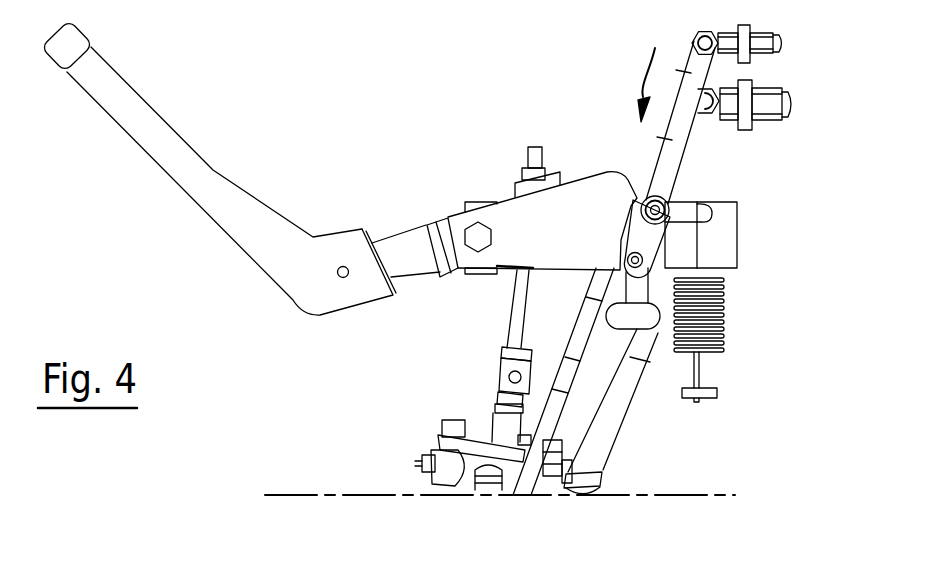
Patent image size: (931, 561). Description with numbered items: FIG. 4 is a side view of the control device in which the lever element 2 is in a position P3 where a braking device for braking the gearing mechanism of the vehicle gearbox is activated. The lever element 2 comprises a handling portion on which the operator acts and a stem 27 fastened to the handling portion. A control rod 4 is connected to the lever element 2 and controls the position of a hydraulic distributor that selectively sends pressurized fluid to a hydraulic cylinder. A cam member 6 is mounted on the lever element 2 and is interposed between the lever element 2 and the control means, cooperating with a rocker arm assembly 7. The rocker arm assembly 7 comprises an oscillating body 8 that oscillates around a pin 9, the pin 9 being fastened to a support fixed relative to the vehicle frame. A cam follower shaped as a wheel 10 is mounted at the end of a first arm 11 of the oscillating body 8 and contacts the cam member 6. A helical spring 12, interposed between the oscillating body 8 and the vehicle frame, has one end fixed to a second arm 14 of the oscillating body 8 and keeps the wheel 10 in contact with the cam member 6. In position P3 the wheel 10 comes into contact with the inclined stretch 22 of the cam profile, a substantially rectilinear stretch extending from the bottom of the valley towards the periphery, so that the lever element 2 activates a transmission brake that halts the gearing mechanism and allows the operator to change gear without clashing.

The lever element 2 is at (143, 127).
The stem 27 is at (403, 255).
The cam member 6 is at (547, 213).
The inclined stretch 22 is at (627, 243).
The pin 9 is at (652, 207).
The rocker arm assembly 7 is at (722, 174).
The position P3 is at (656, 72).
The second arm 14 is at (712, 213).
The oscillating body 8 is at (680, 213).
The first arm 11 is at (652, 243).
The spring 12 is at (720, 348).
The wheel 10 is at (637, 266).
The control rod 4 is at (520, 310).